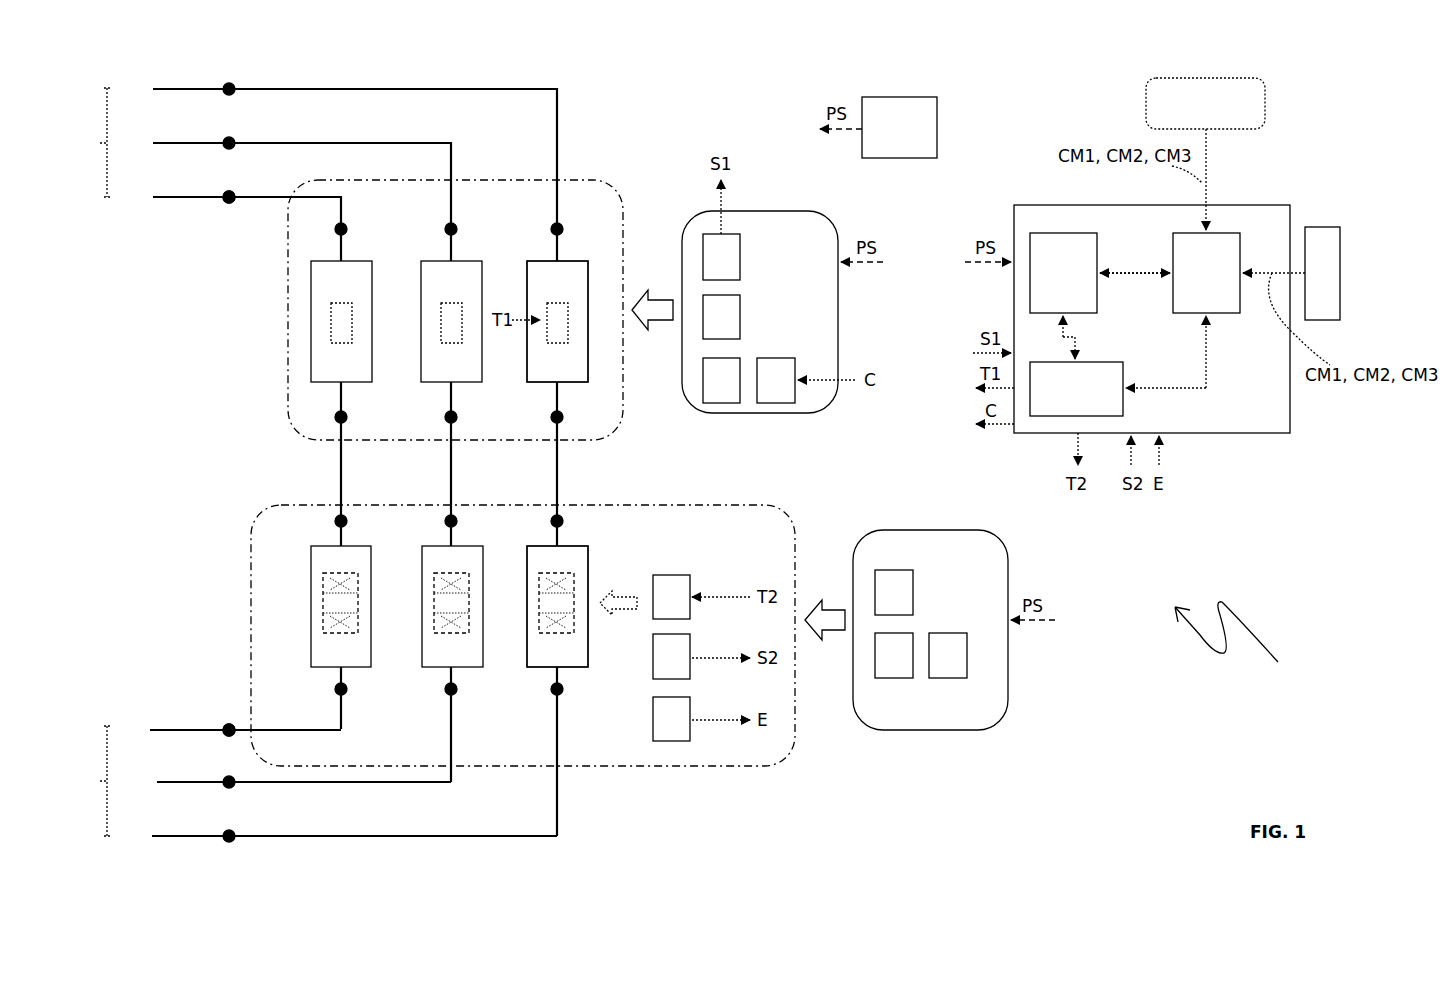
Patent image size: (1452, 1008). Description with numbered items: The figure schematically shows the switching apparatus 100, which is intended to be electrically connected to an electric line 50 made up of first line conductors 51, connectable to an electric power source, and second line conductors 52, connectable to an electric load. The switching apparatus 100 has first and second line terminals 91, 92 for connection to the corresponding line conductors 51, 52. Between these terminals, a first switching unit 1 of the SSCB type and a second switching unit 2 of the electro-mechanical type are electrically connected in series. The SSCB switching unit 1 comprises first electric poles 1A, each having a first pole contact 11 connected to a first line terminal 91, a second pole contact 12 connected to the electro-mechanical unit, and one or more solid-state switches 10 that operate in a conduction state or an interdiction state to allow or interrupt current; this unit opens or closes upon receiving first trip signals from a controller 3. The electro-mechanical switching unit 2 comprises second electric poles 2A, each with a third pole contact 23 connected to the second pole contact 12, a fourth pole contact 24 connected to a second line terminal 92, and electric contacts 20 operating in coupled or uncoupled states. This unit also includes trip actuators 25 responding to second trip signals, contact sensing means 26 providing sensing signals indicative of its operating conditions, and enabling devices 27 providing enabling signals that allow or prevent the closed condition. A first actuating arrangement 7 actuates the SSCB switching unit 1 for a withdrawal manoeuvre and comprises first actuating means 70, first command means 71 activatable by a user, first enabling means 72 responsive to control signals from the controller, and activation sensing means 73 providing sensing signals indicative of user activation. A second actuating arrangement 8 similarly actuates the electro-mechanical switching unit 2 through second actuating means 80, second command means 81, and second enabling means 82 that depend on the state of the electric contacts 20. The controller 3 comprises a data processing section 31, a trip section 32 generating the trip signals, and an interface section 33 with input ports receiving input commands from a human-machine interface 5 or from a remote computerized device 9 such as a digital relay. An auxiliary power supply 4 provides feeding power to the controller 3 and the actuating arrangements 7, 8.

The switching apparatus 100 is at (1241, 646).
The electric line 50 is at (315, 462).
The first line conductors 51 is at (183, 197).
The second line conductors 52 is at (180, 730).
The first line terminals 91 is at (235, 203).
The second line terminals 92 is at (229, 724).
The first switching unit 1 is at (288, 286).
The first electric poles 1A is at (588, 275).
The solid-state switches 10 is at (350, 315).
The first pole contact 11 is at (348, 233).
The second pole contact 12 is at (348, 421).
The second switching unit 2 is at (251, 546).
The second electric poles 2A is at (590, 562).
The electric contacts 20 is at (340, 612).
The third pole contact 23 is at (347, 519).
The fourth pole contact 24 is at (347, 687).
The trip actuators 25 is at (671, 597).
The contact sensing means 26 is at (671, 656).
The enabling devices 27 is at (671, 719).
The first actuating arrangement 7 is at (775, 211).
The first actuating means 70 is at (721, 317).
The first command means 71 is at (721, 380).
The first enabling means 72 is at (776, 380).
The activation sensing means 73 is at (721, 257).
The second actuating arrangement 8 is at (943, 530).
The second actuating means 80 is at (894, 592).
The second command means 81 is at (894, 655).
The second enabling means 82 is at (948, 655).
The auxiliary power supply 4 is at (916, 150).
The controller 3 is at (1232, 425).
The data processing section 31 is at (1076, 389).
The trip section 32 is at (1063, 273).
The interface section 33 is at (1206, 273).
The human-machine interface 5 is at (1318, 242).
The remote computerized device 9 is at (1253, 113).